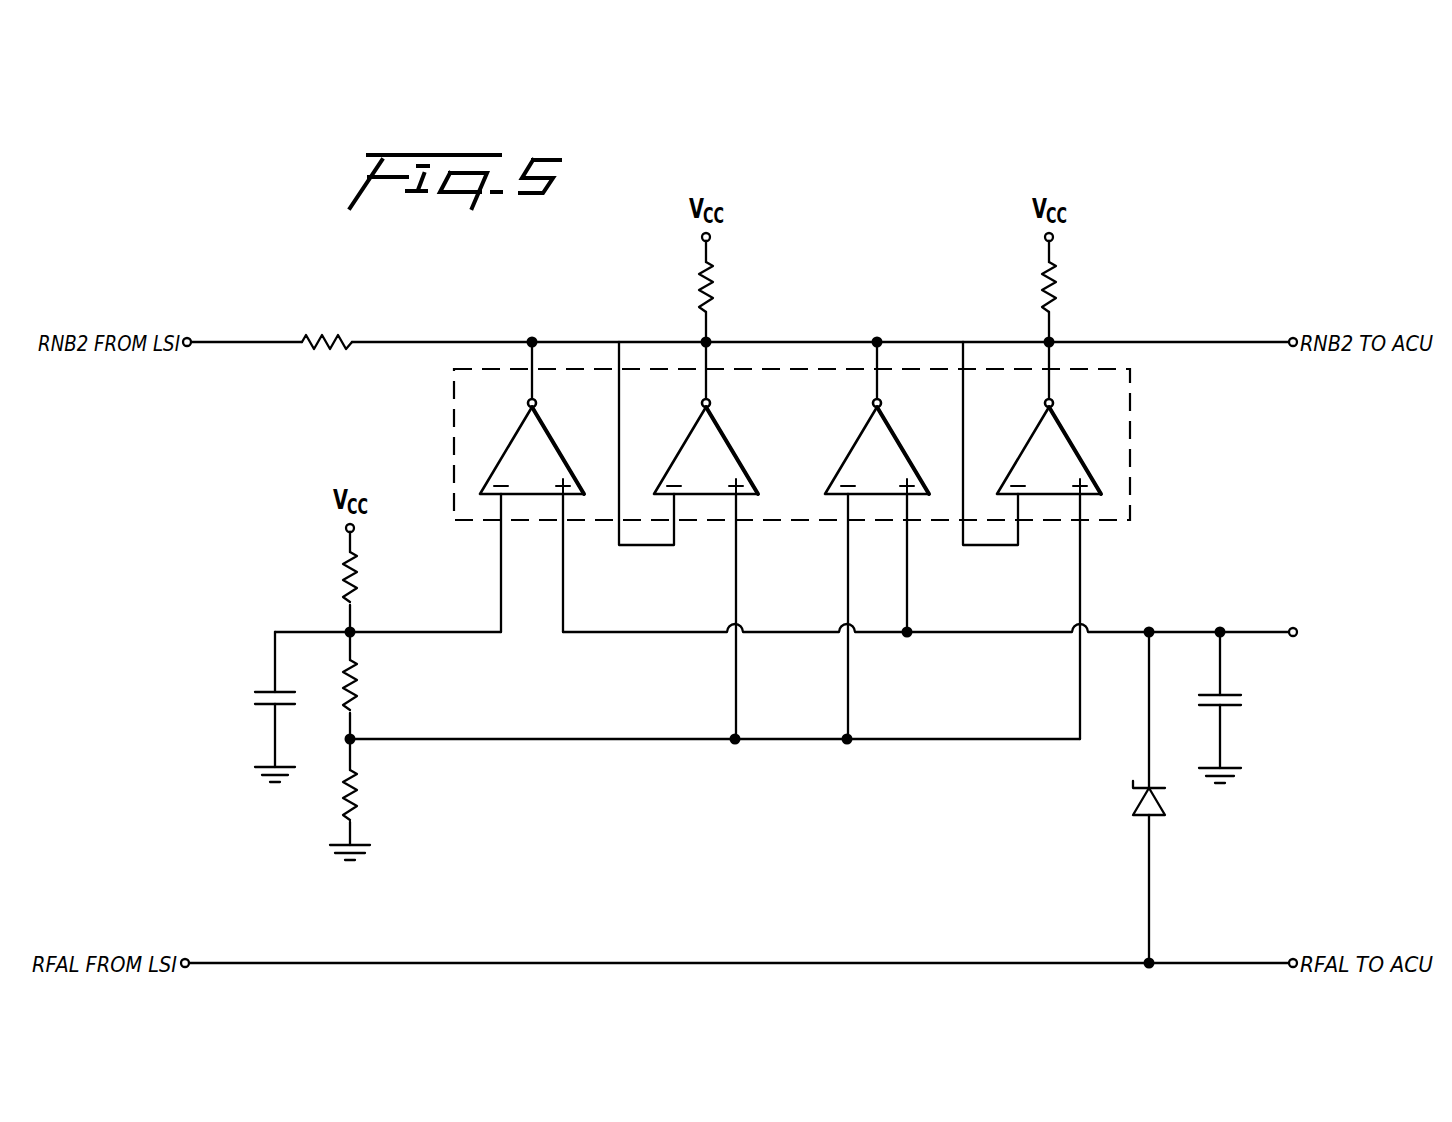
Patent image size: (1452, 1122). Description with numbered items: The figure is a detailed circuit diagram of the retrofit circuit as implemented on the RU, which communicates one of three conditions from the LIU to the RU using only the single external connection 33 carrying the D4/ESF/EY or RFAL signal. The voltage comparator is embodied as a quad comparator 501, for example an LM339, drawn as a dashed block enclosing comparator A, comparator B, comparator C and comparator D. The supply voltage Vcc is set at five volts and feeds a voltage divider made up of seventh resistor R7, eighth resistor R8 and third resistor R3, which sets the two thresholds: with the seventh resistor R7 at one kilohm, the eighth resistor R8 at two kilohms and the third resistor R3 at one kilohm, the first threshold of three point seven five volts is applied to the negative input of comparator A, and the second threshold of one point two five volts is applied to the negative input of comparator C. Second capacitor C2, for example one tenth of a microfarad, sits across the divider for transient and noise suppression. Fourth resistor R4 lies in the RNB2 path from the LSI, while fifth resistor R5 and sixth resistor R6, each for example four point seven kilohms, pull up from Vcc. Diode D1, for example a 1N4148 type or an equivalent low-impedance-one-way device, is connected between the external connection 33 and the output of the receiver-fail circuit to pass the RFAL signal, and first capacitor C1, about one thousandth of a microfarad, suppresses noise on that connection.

The quad comparator 501 is at (1131, 433).
The external connection 33 is at (1292, 628).
The third resistor R3 is at (361, 795).
The fourth resistor R4 is at (327, 328).
The fifth resistor R5 is at (719, 287).
The sixth resistor R6 is at (1063, 287).
The seventh resistor R7 is at (361, 577).
The eighth resistor R8 is at (361, 685).
The first capacitor C1 is at (1232, 701).
The second capacitor C2 is at (261, 699).
The diode D1 is at (1135, 798).
The comparator A is at (532, 446).
The comparator B is at (706, 446).
The comparator C is at (877, 446).
The comparator D is at (1049, 446).